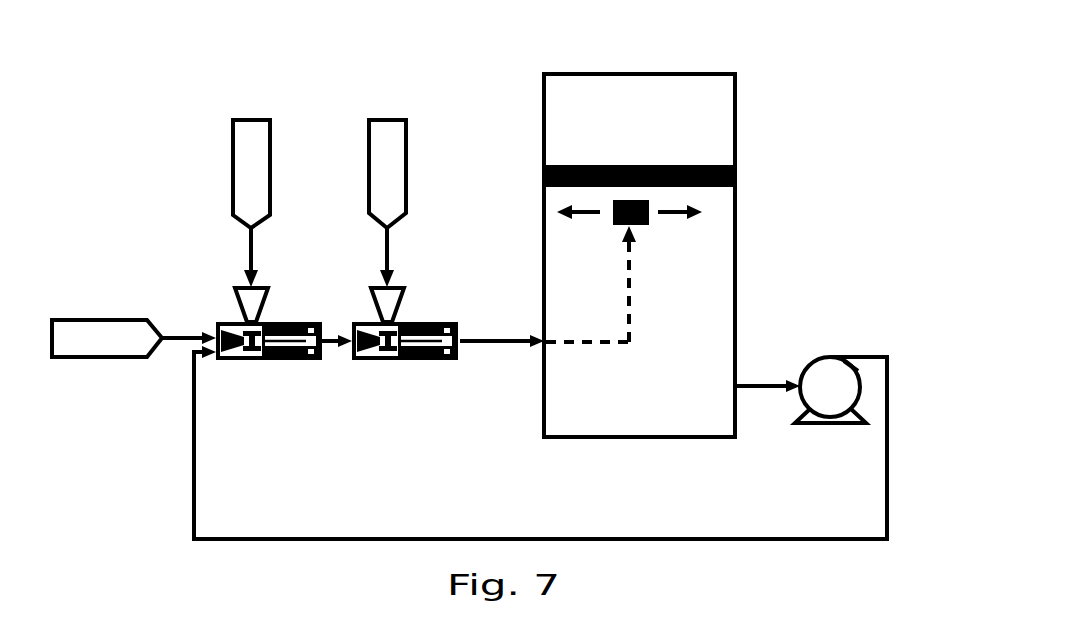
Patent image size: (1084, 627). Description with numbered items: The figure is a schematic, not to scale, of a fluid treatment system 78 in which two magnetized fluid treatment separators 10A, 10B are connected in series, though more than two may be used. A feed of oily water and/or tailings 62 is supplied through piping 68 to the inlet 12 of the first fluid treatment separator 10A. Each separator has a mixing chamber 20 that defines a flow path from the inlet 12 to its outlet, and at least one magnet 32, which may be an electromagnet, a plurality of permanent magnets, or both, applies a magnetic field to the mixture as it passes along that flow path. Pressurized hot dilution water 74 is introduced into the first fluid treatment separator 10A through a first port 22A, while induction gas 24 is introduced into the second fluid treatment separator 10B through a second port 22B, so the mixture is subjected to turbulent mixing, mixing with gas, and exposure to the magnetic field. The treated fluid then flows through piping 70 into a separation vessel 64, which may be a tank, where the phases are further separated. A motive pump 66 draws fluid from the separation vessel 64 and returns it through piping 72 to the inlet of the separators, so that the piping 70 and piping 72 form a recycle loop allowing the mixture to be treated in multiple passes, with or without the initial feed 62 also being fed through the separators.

The fluid treatment system 78 is at (830, 66).
The pressurized hot dilution water 74 is at (237, 120).
The induction gas 24 is at (387, 120).
The first port 22A is at (240, 288).
The second port 22B is at (397, 290).
The first fluid treatment separator 10A is at (217, 323).
The second fluid treatment separator 10B is at (353, 322).
The magnet 32 is at (290, 323).
The inlet 12 is at (248, 362).
The mixing chamber 20 is at (318, 363).
The feed of oily water and/or tailings 62 is at (106, 319).
The piping 68 is at (180, 341).
The piping 70 is at (500, 330).
The separation vessel 64 is at (738, 288).
The motive pump 66 is at (845, 425).
The piping 72 is at (557, 537).